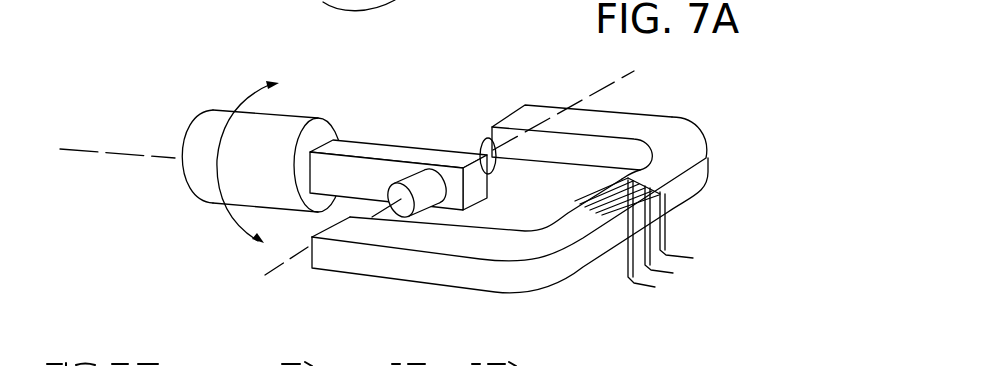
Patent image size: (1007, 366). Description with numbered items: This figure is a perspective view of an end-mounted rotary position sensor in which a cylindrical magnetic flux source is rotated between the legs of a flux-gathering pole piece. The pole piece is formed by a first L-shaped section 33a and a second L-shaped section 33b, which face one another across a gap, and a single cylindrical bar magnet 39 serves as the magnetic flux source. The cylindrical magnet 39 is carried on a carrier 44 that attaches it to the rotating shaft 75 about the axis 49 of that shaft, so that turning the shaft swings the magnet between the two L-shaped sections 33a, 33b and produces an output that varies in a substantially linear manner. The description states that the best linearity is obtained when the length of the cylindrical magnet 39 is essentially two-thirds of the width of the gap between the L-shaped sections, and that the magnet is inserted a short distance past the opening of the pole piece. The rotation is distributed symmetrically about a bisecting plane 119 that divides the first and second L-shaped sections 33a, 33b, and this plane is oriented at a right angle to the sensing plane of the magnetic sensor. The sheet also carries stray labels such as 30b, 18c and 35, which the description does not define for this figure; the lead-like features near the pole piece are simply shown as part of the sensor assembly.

The housing portion (adjacent figure) 30b is at (115, 0).
The sensor element (adjacent figure) 18c is at (318, 7).
The first L-shaped section 33a is at (592, 250).
The second L-shaped section 33b is at (612, 124).
The sensor leads 35 is at (640, 178).
The bisecting plane 119 is at (603, 89).
The axis 49 is at (118, 155).
The rotating shaft 75 is at (215, 117).
The carrier 44 is at (383, 151).
The cylindrical magnet 39 is at (423, 203).